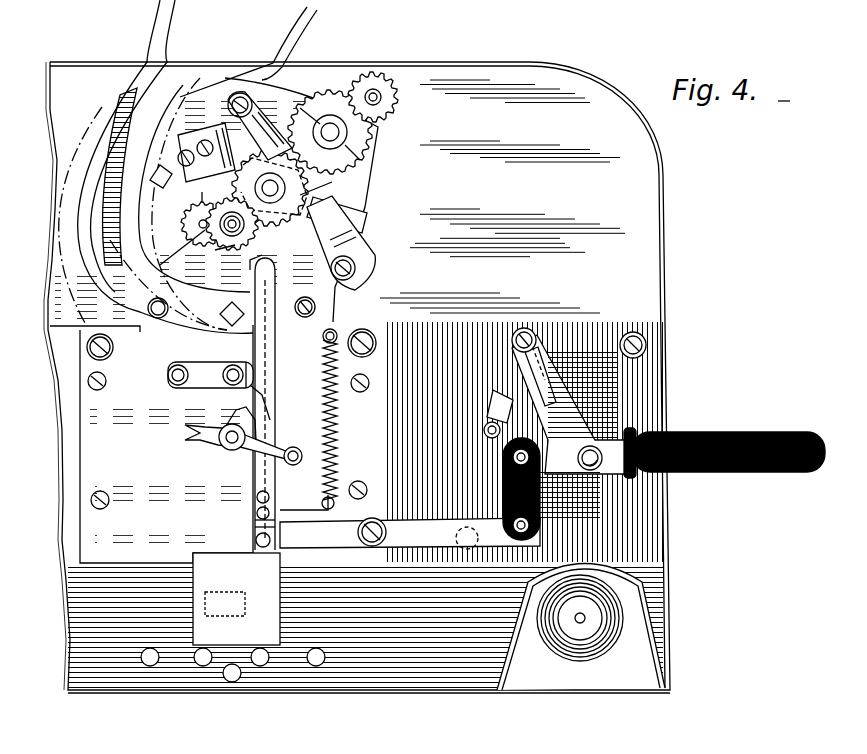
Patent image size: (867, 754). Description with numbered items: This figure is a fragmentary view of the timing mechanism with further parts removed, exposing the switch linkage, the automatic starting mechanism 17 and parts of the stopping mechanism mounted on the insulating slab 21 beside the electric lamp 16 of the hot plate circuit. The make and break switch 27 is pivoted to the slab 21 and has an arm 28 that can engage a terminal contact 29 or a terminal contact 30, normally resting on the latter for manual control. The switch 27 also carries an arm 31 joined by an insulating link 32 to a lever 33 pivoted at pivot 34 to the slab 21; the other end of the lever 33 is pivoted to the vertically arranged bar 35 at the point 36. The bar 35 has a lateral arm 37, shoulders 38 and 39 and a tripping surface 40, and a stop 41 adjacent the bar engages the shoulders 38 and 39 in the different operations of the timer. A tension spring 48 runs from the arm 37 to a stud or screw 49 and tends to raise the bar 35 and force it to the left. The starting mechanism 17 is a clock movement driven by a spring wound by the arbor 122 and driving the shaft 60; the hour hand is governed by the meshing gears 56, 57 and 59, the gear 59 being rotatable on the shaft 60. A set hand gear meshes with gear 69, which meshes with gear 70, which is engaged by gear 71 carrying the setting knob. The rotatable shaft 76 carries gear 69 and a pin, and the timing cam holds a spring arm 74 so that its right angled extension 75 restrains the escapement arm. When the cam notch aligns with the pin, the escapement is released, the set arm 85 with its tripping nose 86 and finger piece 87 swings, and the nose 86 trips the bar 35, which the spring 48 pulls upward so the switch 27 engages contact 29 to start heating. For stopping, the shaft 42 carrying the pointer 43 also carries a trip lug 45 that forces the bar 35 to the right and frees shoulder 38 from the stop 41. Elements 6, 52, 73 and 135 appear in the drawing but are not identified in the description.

The casing 6 is at (383, 95).
The electric lamp 16 is at (623, 617).
The automatic starting mechanism 17 is at (357, 377).
The insulating slab 21 is at (575, 322).
The make and break switch 27 is at (724, 444).
The arm 28 is at (560, 420).
The terminal contact 29 is at (560, 362).
The terminal contact 30 is at (490, 405).
The arm 31 is at (551, 489).
The insulating link 32 is at (518, 545).
The lever 33 is at (430, 540).
The pivot 34 is at (366, 522).
The vertically arranged bar 35 is at (258, 470).
The pivot point 36 is at (265, 531).
The lateral arm 37 is at (318, 506).
The shoulder 38 is at (266, 410).
The shoulder 39 is at (262, 372).
The tripping surface 40 is at (244, 260).
The stop 41 is at (248, 378).
The shaft or arbor 42 is at (228, 446).
The pointer 43 is at (200, 433).
The trip lug 45 is at (245, 418).
The tension spring 48 is at (345, 420).
The stud or screw 49 is at (326, 341).
The switch plate 52 is at (236, 599).
The gear 56 is at (187, 223).
The gear 57 is at (174, 251).
The gear 59 is at (243, 224).
The shaft 60 is at (213, 259).
The gear 69 is at (340, 196).
The gear 70 is at (355, 146).
The gear 71 is at (392, 103).
The pawl arm 73 is at (350, 296).
The spring arm 74 is at (368, 218).
The right angled extension 75 is at (270, 188).
The rotatable shaft 76 is at (260, 126).
The set arm 85 is at (165, 105).
The tripping nose 86 is at (229, 300).
The finger piece 87 is at (285, 47).
The arbor 122 is at (153, 175).
The pin 135 is at (183, 201).